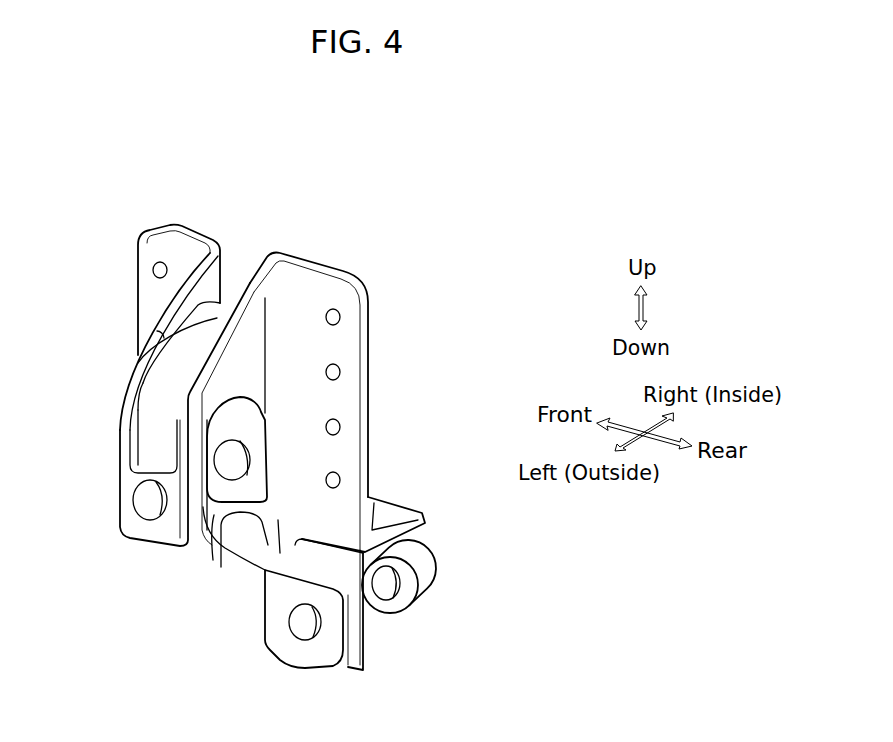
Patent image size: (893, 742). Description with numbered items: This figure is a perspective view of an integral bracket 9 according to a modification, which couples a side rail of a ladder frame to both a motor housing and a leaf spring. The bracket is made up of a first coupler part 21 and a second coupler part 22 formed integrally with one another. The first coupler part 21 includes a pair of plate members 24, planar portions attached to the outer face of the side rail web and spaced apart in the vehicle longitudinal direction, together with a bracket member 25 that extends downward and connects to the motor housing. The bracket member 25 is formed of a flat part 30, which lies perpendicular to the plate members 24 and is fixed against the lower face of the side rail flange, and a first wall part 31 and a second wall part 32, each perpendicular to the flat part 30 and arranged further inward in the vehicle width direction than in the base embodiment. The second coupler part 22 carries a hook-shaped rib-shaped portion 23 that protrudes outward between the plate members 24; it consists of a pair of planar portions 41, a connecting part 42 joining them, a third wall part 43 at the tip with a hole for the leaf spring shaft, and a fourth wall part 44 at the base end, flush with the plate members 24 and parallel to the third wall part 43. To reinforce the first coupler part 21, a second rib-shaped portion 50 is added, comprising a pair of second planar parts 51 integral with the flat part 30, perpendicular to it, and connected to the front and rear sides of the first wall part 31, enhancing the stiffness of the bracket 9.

The integral bracket 9 is at (428, 287).
The first coupler part 21 is at (386, 655).
The second coupler part 22 is at (148, 548).
The rib-shaped portion 23 is at (103, 416).
The plate member 24 is at (148, 247).
The bracket member 25 is at (484, 486).
The flat part 30 is at (420, 525).
The first wall part 31 is at (318, 660).
The second wall part 32 is at (418, 620).
The planar portion 41 is at (178, 387).
The connecting part 42 is at (217, 318).
The third wall part 43 is at (130, 476).
The fourth wall part 44 is at (208, 553).
The second rib-shaped portion 50 is at (243, 628).
The second planar part 51 is at (247, 563).